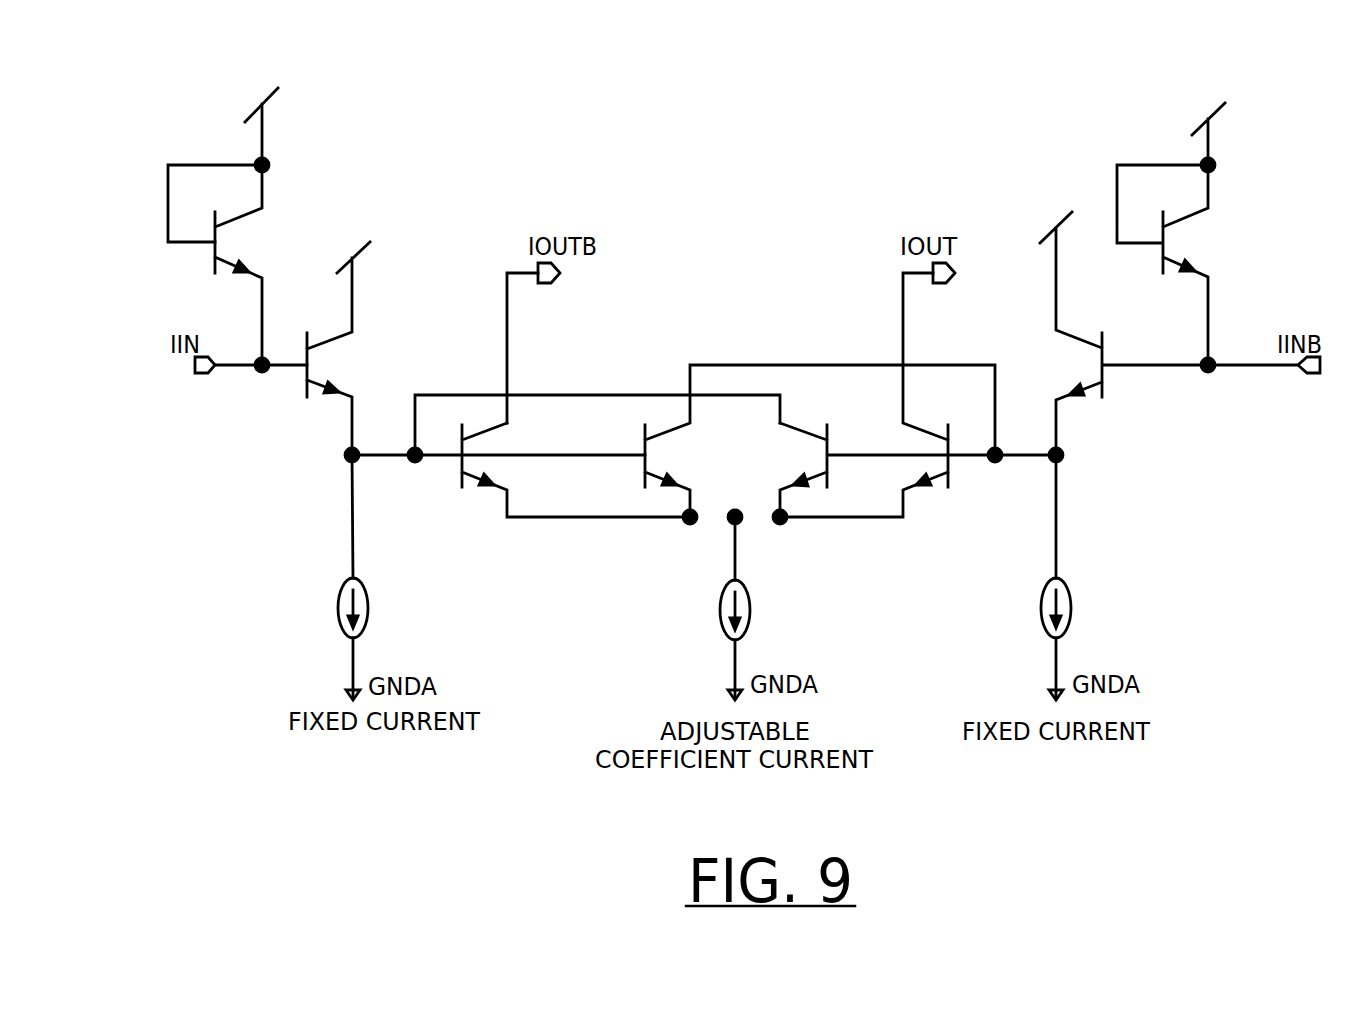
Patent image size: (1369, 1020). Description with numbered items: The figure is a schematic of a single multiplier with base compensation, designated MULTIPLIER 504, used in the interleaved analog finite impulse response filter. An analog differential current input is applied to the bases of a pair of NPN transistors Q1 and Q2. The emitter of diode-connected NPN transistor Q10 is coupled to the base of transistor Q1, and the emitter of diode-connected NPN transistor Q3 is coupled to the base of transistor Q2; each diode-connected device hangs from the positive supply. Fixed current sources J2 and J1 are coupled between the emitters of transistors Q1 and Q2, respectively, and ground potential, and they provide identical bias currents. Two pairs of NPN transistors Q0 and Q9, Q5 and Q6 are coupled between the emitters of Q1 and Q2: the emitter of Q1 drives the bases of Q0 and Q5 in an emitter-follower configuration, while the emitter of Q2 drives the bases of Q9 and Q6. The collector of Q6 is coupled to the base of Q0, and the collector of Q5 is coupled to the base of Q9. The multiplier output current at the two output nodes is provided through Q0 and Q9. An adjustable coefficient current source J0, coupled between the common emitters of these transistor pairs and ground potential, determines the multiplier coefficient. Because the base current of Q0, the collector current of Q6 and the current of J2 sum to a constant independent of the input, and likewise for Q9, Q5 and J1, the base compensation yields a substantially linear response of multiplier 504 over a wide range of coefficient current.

The multiplier 504 is at (752, 183).
The NPN transistor Q0 is at (576, 470).
The NPN transistor Q1 is at (342, 336).
The NPN transistor Q2 is at (1094, 331).
The NPN transistor Q3 is at (1176, 230).
The NPN transistor Q5 is at (820, 441).
The NPN transistor Q6 is at (914, 470).
The NPN transistor Q9 is at (864, 395).
The NPN transistor Q10 is at (225, 217).
The adjustable coefficient current source J0 is at (756, 608).
The fixed current source J1 is at (1069, 577).
The fixed current source J2 is at (374, 577).